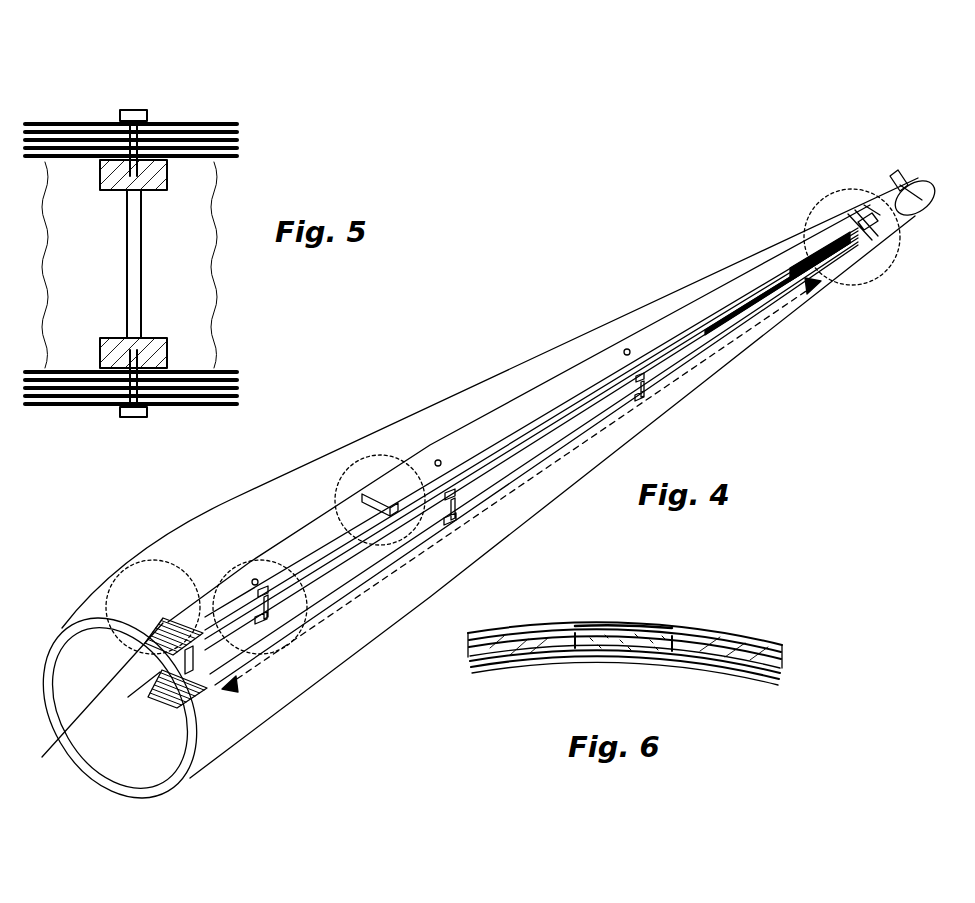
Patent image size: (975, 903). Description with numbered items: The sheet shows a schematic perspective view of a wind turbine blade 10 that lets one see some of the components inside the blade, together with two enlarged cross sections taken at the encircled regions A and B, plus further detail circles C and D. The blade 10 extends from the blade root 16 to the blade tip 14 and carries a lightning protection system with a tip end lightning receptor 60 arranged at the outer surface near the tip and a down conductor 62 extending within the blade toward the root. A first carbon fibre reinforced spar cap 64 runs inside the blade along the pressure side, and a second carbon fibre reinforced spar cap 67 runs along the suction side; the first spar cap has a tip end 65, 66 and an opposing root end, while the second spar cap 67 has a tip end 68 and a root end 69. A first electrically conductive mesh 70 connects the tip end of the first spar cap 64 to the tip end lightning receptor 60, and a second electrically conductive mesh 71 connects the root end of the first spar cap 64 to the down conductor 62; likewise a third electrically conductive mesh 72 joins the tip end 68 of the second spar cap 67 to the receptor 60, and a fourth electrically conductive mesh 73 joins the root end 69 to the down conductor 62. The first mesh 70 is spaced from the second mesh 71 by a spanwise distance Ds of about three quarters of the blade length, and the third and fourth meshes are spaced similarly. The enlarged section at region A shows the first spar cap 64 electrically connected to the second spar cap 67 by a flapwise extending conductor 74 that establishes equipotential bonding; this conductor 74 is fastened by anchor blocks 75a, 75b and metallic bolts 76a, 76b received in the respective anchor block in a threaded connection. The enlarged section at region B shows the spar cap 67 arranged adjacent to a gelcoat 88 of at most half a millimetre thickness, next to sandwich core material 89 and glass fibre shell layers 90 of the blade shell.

In FIG. 4, the wind turbine blade 10 is at (525, 298).
In FIG. 4, the blade tip 14 is at (927, 180).
In FIG. 4, the blade root 16 is at (47, 640).
In FIG. 4, the tip end lightning receptor 60 is at (905, 170).
In FIG. 4, the down conductor 62 is at (97, 722).
In FIG. 5, the first carbon fibre reinforced spar cap 64 is at (70, 385).
In FIG. 4, the first carbon fibre reinforced spar cap 64 is at (375, 555).
In FIG. 4, the tip end of first spar cap 65 is at (812, 297).
In FIG. 4, the tip end of first spar cap 66 is at (222, 700).
In FIG. 5, the second carbon fibre reinforced spar cap 67 is at (80, 130).
In FIG. 4, the second carbon fibre reinforced spar cap 67 is at (565, 385).
In FIG. 6, the second carbon fibre reinforced spar cap 67 is at (645, 632).
In FIG. 4, the tip end of second spar cap 68 is at (790, 245).
In FIG. 4, the root end of second spar cap 69 is at (175, 620).
In FIG. 4, the first electrically conductive mesh 70 is at (833, 262).
In FIG. 4, the second electrically conductive mesh 71 is at (197, 693).
In FIG. 4, the third electrically conductive mesh 72 is at (820, 240).
In FIG. 4, the fourth electrically conductive mesh 73 is at (165, 635).
In FIG. 5, the conductor 74 is at (143, 240).
In FIG. 5, the anchor block 75a is at (112, 176).
In FIG. 5, the anchor block 75b is at (165, 350).
In FIG. 5, the metallic bolt 76a is at (133, 110).
In FIG. 5, the metallic bolt 76b is at (133, 417).
In FIG. 6, the gelcoat 88 is at (575, 630).
In FIG. 6, the sandwich core material 89 is at (510, 645).
In FIG. 6, the glass fibre shell layers 90 is at (625, 662).
In FIG. 4, the encircled region A is at (287, 653).
In FIG. 4, the encircled region B is at (383, 455).
In FIG. 4, the detail C is at (120, 600).
In FIG. 4, the detail D is at (895, 255).
In FIG. 4, the spanwise distance Ds is at (521, 485).